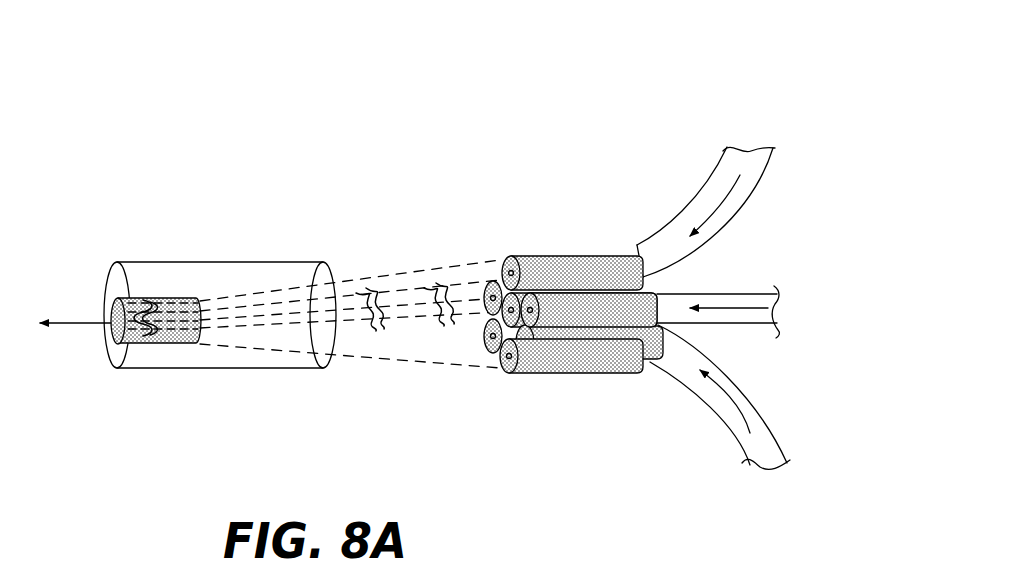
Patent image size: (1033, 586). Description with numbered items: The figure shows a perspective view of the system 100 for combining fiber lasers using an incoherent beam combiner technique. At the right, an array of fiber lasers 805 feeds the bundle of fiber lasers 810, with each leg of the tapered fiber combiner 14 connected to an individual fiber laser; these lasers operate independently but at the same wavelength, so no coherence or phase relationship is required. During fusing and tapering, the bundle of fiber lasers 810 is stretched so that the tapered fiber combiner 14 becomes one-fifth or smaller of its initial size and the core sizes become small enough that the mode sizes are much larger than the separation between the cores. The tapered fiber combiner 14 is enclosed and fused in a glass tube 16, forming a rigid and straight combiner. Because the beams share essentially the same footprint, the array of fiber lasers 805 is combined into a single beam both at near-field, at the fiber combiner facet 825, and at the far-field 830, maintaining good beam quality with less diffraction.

The system 100 is at (607, 83).
The tapered fiber combiner 14 is at (171, 289).
The glass tube 16 is at (238, 269).
The array of fiber lasers 805 is at (816, 118).
The bundle of fiber lasers 810 is at (557, 251).
The fiber combiner facet 825 is at (338, 261).
The far-field 830 is at (99, 282).